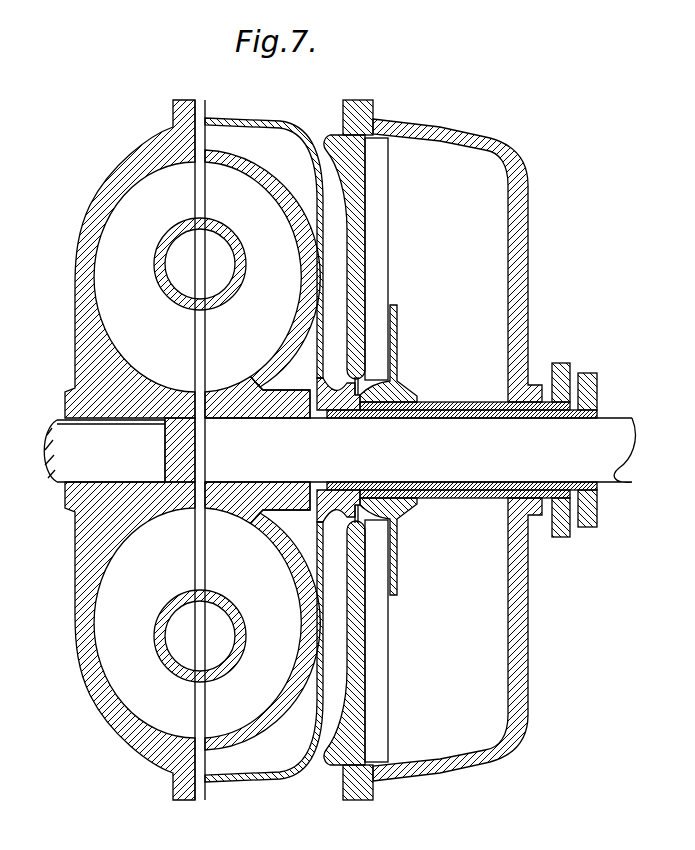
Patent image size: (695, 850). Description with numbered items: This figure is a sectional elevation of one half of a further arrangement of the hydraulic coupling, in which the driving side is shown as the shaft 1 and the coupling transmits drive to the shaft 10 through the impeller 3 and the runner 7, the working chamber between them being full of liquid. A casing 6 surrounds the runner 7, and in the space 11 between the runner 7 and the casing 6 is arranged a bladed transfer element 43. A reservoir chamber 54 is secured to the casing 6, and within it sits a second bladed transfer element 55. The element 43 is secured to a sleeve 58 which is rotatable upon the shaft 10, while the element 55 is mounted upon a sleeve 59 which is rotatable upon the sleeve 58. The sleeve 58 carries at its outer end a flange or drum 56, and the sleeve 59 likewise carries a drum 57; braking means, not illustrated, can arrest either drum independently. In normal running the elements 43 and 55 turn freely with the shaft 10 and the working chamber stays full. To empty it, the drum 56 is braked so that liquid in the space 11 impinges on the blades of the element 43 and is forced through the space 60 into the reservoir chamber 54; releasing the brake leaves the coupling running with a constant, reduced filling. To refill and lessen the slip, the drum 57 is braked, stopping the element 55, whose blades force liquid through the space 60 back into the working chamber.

The drive shaft 1 is at (104, 451).
The impeller 3 is at (122, 170).
The casing 6 is at (291, 132).
The runner 7 is at (291, 216).
The shaft 10 is at (420, 450).
The space 11 is at (281, 450).
The transfer element 43 is at (331, 450).
The reservoir chamber 54 is at (470, 112).
The second transfer element 55 is at (386, 213).
The flange or drum 56 is at (598, 383).
The drum 57 is at (566, 363).
The sleeve 58 is at (393, 482).
The sleeve 59 is at (500, 490).
The space 60 is at (361, 393).